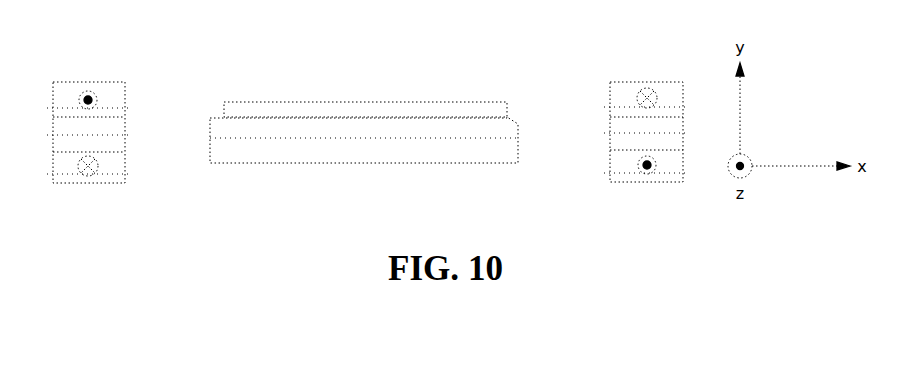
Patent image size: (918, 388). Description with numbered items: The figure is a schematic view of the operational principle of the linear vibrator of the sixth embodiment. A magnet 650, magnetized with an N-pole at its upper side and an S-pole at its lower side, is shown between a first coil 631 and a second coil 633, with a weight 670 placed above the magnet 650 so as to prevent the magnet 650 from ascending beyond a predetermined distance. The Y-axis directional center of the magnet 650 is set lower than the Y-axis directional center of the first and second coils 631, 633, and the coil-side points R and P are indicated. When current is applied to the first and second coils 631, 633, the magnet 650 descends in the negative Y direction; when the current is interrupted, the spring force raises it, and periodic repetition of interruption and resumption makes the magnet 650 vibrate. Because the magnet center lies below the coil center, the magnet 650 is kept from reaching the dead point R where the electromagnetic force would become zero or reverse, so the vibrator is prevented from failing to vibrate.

The first coil 631 is at (101, 93).
The second coil 633 is at (667, 80).
The magnet 650 is at (400, 155).
The weight 670 is at (380, 110).